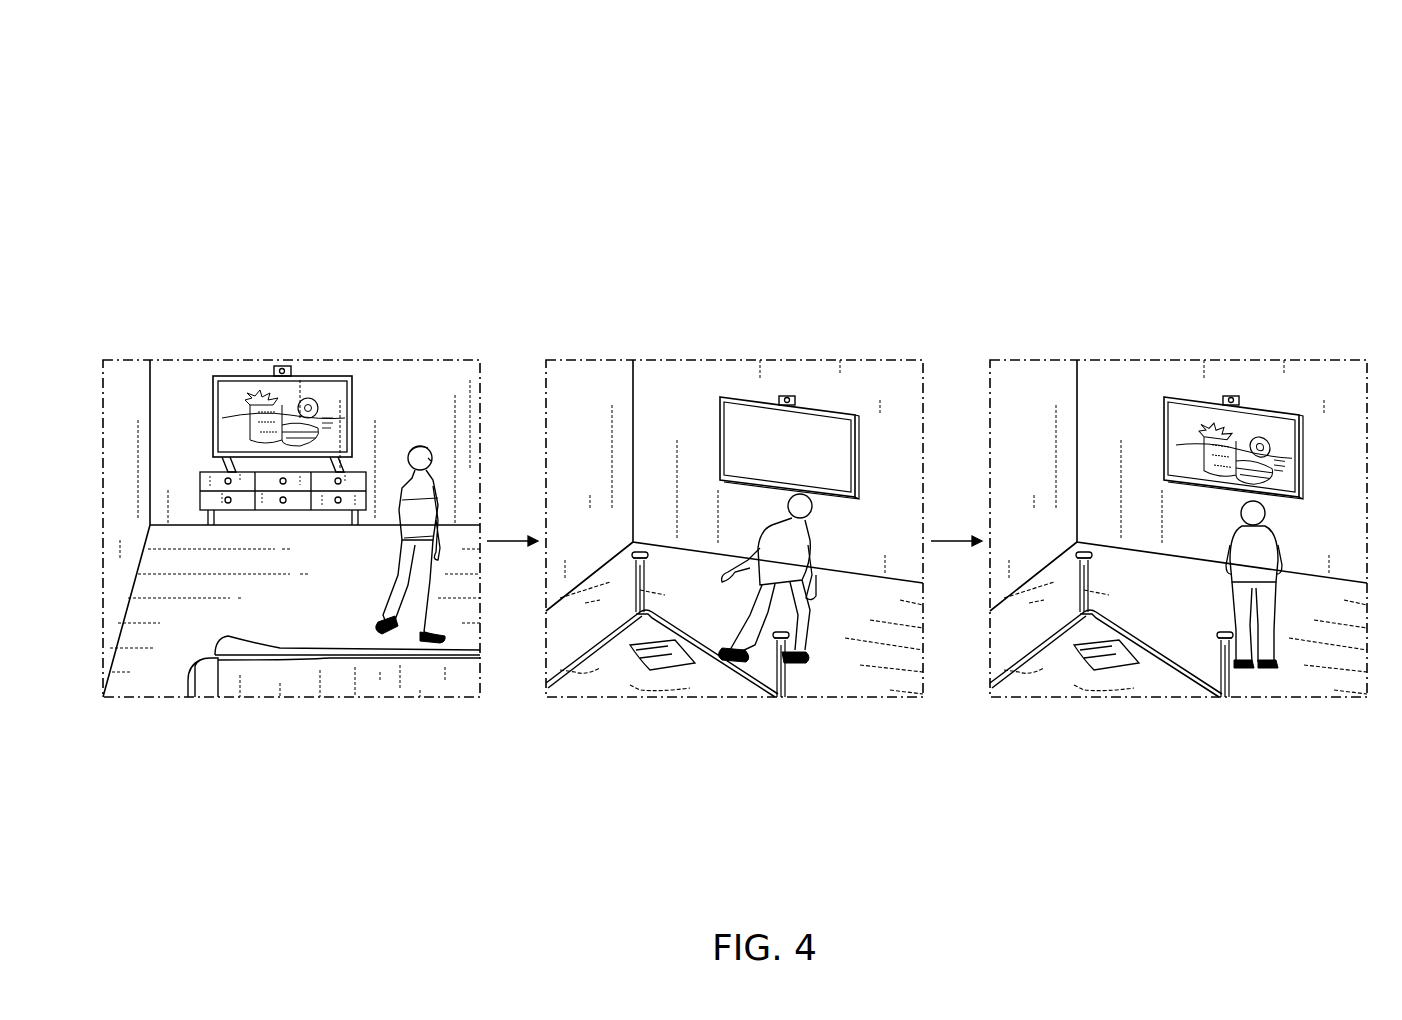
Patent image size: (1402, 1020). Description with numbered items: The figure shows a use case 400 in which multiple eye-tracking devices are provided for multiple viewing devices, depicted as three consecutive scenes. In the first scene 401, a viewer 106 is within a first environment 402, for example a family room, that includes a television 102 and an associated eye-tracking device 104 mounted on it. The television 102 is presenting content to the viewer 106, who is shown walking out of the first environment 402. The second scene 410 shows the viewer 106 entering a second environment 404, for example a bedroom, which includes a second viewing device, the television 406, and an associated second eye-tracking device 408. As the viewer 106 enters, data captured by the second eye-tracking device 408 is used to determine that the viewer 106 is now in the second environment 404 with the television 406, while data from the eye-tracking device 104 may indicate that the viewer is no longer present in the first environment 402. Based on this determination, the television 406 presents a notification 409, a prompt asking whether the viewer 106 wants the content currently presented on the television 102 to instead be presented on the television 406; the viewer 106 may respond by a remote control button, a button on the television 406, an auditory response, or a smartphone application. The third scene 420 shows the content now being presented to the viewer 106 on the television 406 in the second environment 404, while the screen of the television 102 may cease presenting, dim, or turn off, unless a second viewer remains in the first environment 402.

The use case 400 is at (238, 86).
The first scene 401 is at (176, 358).
The first environment 402 is at (206, 632).
The television 102 is at (350, 375).
The eye-tracking device 104 is at (285, 365).
The viewer 106 is at (426, 442).
The second scene 410 is at (619, 358).
The second environment 404 is at (596, 477).
The television 406 is at (716, 420).
The second eye-tracking device 408 is at (792, 396).
The notification 409 is at (822, 424).
The third scene 420 is at (1063, 358).